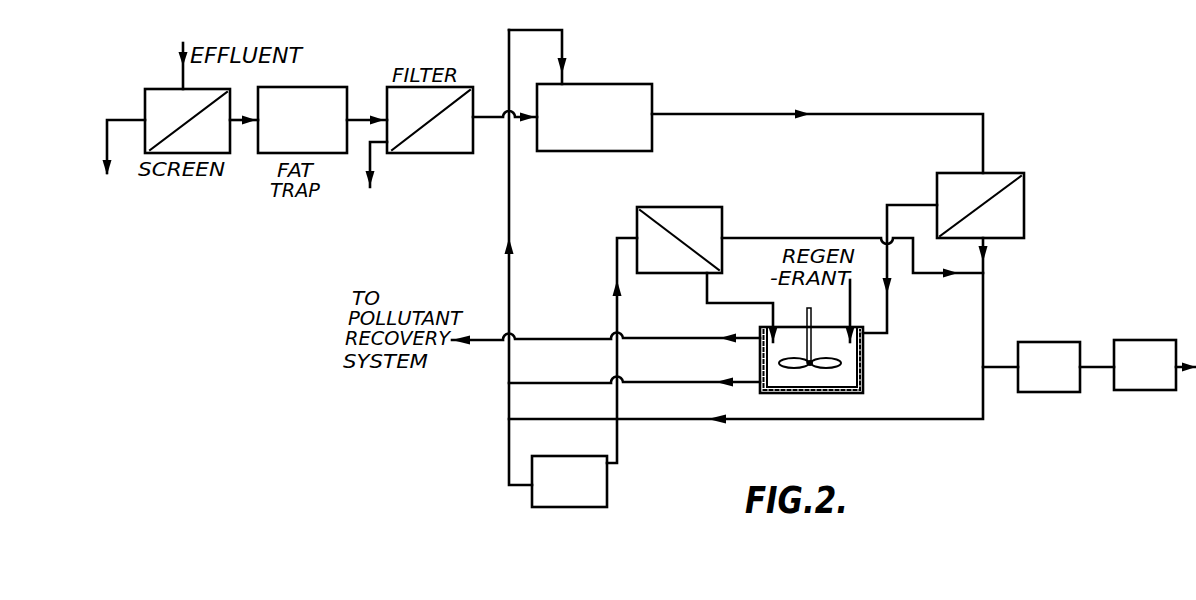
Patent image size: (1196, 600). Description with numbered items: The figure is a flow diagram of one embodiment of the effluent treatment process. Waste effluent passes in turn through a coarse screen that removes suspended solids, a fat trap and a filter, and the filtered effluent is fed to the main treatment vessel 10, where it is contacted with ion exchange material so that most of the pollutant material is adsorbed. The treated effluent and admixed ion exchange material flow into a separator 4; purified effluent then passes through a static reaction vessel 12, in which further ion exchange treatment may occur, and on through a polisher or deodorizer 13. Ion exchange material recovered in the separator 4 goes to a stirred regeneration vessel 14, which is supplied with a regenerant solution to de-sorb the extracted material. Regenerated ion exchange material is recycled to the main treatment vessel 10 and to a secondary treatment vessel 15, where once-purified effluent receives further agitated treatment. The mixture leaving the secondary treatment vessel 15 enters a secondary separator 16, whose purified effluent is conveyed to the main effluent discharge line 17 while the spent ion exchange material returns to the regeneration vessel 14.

The main treatment vessel 10 is at (560, 151).
The separator 4 is at (1024, 193).
The secondary separator 16 is at (688, 207).
The regeneration vessel 14 is at (863, 370).
The main effluent discharge line 17 is at (983, 293).
The static reaction vessel 12 is at (1048, 342).
The polisher or deodorizer 13 is at (1137, 340).
The secondary treatment vessel 15 is at (607, 482).